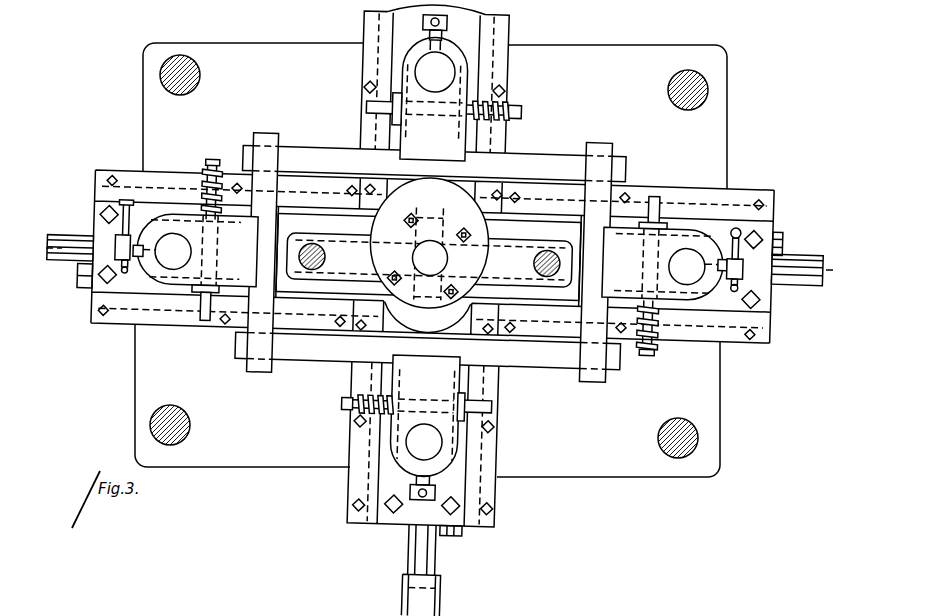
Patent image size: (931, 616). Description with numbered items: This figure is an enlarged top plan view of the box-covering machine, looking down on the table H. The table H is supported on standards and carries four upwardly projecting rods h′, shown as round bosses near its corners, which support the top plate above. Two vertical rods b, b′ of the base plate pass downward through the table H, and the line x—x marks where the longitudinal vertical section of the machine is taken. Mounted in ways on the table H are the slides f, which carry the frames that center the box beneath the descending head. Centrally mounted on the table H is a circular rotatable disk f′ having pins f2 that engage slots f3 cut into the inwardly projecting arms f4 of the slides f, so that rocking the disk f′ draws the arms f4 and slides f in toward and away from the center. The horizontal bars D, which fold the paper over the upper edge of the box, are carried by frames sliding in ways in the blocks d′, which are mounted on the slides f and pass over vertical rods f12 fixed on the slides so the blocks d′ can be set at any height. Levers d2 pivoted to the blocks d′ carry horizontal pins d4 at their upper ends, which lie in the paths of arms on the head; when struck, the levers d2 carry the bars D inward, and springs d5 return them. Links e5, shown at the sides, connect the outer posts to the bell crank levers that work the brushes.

The table H is at (474, 252).
The upwardly projecting rods h' is at (429, 258).
The bars D is at (526, 156).
The blocks d' is at (430, 257).
The levers d2 is at (664, 226).
The horizontal pins d4 is at (364, 108).
The springs d5 is at (512, 122).
The slides f is at (430, 242).
The circular rotatable disk f' is at (480, 235).
The pins f2 is at (381, 263).
The slots f3 is at (470, 293).
The inwardly projecting arms f4 is at (523, 297).
The vertical rods f12 is at (430, 255).
The vertical rod b is at (429, 250).
The vertical rod b' is at (543, 251).
The link e5 is at (60, 263).
The section line x is at (439, 261).